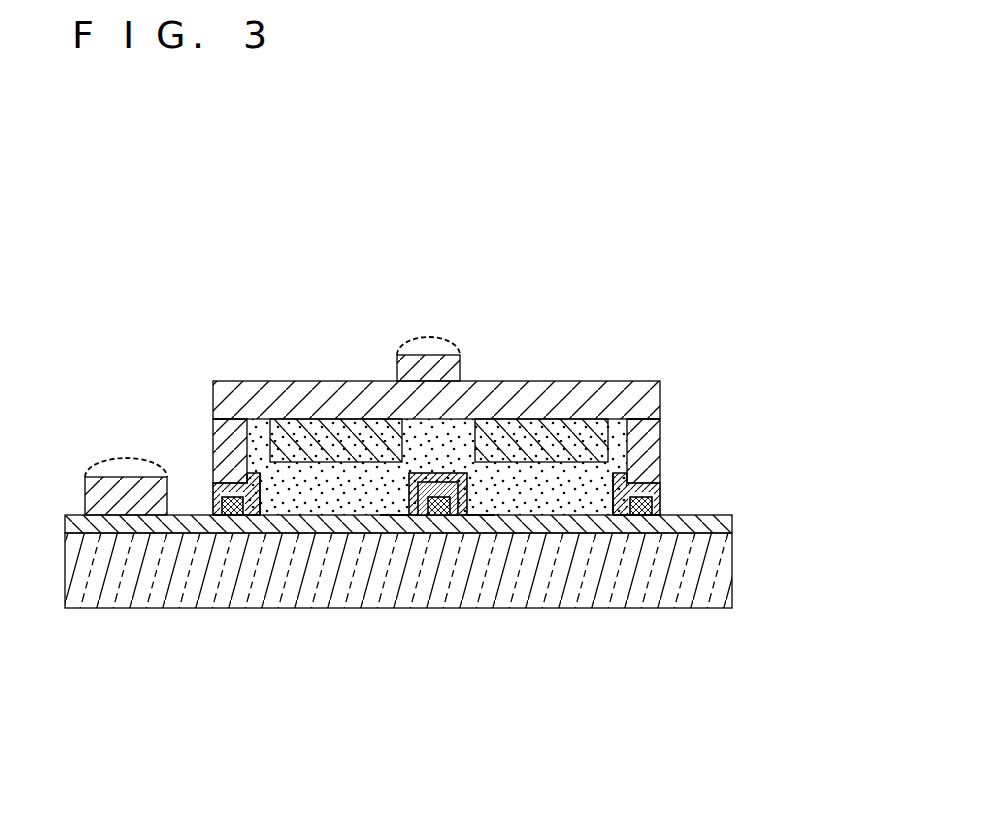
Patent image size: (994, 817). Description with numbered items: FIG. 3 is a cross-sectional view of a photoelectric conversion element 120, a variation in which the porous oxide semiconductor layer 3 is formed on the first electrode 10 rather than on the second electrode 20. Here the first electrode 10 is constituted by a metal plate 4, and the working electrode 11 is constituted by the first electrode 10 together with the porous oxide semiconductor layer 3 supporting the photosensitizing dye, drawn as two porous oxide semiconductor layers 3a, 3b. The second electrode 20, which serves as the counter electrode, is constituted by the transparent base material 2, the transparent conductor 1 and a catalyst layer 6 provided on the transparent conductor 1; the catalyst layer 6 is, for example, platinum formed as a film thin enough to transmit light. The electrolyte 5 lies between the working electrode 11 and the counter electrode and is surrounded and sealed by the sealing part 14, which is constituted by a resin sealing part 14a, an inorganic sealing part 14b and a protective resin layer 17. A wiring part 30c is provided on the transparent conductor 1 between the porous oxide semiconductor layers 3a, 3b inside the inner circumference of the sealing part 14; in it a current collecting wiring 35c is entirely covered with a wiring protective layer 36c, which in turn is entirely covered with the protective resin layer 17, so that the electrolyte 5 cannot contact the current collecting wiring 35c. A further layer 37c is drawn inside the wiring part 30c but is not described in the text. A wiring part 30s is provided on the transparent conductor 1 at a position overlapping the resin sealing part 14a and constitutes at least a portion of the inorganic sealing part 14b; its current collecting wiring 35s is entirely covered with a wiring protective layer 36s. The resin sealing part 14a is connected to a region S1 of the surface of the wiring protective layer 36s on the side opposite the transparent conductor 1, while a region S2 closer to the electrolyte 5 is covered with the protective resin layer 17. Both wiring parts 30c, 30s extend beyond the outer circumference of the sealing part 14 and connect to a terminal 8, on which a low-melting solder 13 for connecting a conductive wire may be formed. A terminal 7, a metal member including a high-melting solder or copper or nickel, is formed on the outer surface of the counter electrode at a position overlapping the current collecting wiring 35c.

The photoelectric conversion element 120 is at (445, 507).
The second electrode 20 is at (398, 632).
The transparent base material 2 is at (398, 620).
The transparent conductor 1 is at (398, 611).
The catalyst layer 6 is at (436, 610).
The terminal 8 is at (126, 444).
The solder 13 is at (261, 371).
The electrolyte 5 is at (437, 399).
The working electrode 11 is at (436, 330).
The porous oxide semiconductor layer 3 is at (439, 349).
The porous oxide semiconductor layer 3a is at (389, 371).
The porous oxide semiconductor layer 3b is at (480, 279).
The first electrode 10 is at (436, 327).
The metal plate 4 is at (555, 279).
The terminal 7 is at (433, 323).
The sealing part 14 is at (439, 618).
The resin sealing part 14a is at (437, 594).
The wiring part 30s is at (430, 621).
The inorganic sealing part 14b is at (416, 597).
The wiring protective layer 36s is at (416, 597).
The current collecting wiring 35s is at (415, 607).
The protective resin layer 17 is at (431, 641).
The wiring part 30c is at (365, 366).
The wiring protective layer 36c is at (412, 390).
The center contact intermediate layer 37c is at (361, 390).
The current collecting wiring 35c is at (400, 263).
The region S1 is at (436, 351).
The region S2 is at (248, 486).